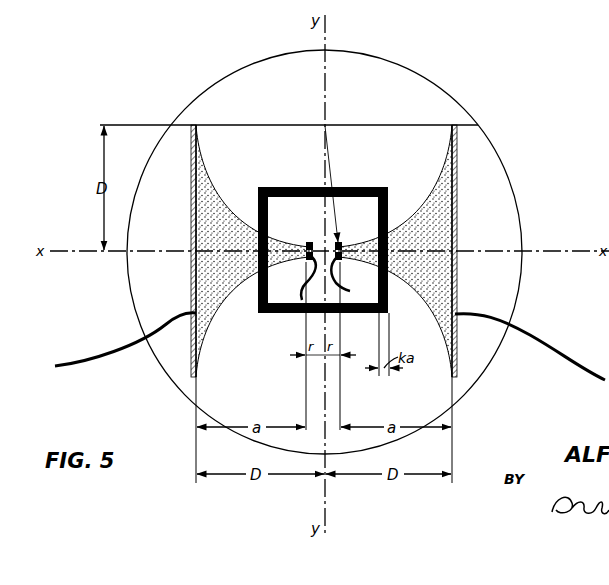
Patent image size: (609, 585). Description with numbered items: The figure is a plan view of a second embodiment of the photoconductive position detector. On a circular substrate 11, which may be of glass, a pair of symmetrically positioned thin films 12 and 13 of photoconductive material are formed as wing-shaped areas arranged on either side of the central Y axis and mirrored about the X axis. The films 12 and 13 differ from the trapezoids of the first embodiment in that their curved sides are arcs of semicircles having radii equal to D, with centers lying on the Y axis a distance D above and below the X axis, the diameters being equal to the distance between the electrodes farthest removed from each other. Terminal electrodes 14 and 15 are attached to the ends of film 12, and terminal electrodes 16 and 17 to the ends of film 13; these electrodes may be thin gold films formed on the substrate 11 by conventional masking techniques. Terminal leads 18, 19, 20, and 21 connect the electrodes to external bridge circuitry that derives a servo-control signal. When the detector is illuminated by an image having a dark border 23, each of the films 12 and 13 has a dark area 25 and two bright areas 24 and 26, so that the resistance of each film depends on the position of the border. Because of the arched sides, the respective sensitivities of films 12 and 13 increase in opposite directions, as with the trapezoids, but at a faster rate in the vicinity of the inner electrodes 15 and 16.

The circular substrate 11 is at (446, 90).
The thin film 12 is at (213, 325).
The thin film 13 is at (440, 318).
The terminal electrode 14 is at (192, 228).
The terminal electrode 15 is at (318, 242).
The terminal electrode 16 is at (328, 244).
The terminal electrode 17 is at (458, 227).
The terminal lead 18 is at (80, 360).
The terminal lead 19 is at (306, 294).
The terminal lead 20 is at (347, 289).
The terminal lead 21 is at (565, 366).
The dark border 23 is at (283, 316).
The bright area 24 is at (353, 245).
The dark area 25 is at (258, 271).
The bright area 26 is at (192, 196).